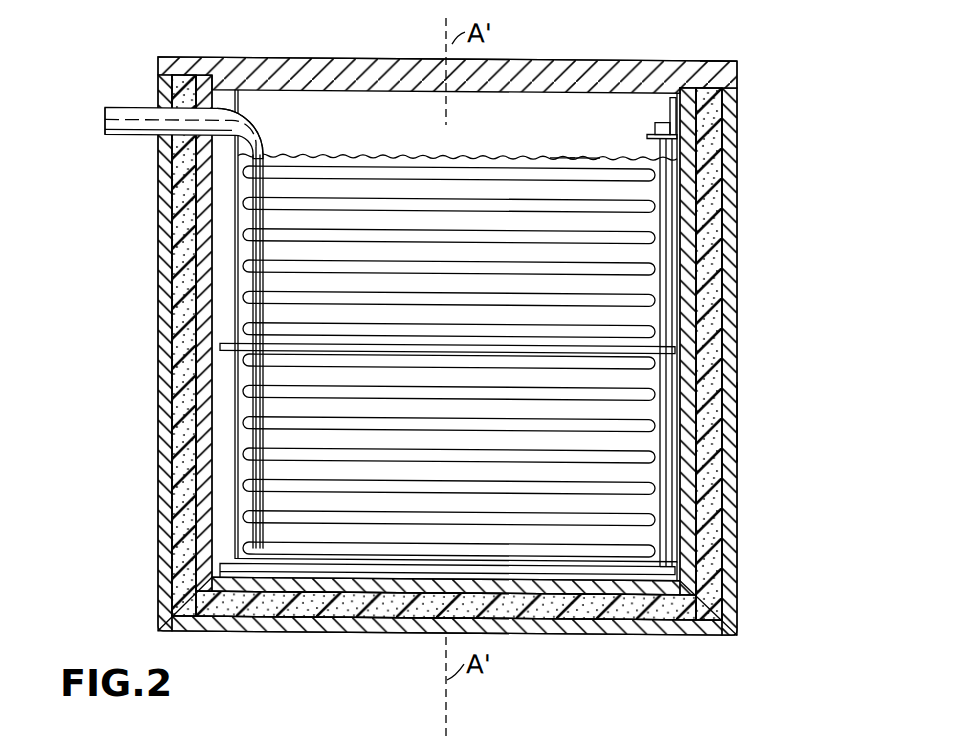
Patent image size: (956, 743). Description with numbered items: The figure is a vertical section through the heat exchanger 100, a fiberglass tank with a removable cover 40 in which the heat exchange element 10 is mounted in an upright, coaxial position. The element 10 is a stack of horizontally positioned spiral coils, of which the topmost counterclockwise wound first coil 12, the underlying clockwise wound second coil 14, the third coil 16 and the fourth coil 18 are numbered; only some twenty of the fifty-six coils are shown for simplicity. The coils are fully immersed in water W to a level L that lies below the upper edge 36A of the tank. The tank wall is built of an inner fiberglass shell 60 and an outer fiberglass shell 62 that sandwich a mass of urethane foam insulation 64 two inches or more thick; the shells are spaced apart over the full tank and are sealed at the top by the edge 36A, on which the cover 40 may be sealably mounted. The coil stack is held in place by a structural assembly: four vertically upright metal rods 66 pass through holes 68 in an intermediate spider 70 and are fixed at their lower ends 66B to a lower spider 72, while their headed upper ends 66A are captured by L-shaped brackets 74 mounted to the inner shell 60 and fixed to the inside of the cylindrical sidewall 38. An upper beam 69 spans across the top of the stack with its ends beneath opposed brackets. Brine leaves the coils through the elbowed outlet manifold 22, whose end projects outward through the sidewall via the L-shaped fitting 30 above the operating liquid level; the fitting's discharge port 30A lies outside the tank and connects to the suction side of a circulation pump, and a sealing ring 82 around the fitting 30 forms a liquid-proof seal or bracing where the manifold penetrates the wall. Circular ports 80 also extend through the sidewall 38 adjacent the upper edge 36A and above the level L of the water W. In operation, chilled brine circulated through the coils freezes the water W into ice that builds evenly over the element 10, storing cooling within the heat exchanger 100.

The heat exchange element 10 is at (268, 122).
The first spiral coil 12 is at (350, 172).
The second spiral coil 14 is at (387, 208).
The third spiral coil 16 is at (451, 238).
The fourth spiral coil 18 is at (511, 268).
The outlet manifold 22 is at (231, 256).
The L-shaped fitting 30 is at (228, 115).
The discharge port 30A is at (103, 118).
The upper edge 36A is at (714, 62).
The cylindrical sidewall 38 is at (735, 420).
The removable cover 40 is at (588, 60).
The inner fiberglass shell 60 is at (685, 195).
The outer fiberglass shell 62 is at (728, 292).
The urethane foam insulation 64 is at (703, 248).
The vertical rod 66 is at (672, 497).
The headed end 66A is at (655, 125).
The lower end 66B is at (672, 563).
The hole 68 is at (675, 348).
The upper beam 69 is at (567, 153).
The intermediate spider 70 is at (222, 347).
The lower spider 72 is at (221, 565).
The L-shaped bracket 74 is at (669, 110).
The circular port 80 is at (160, 152).
The sealing ring 82 is at (158, 105).
The heat exchanger 100 is at (742, 148).
The water W is at (301, 148).
The level L is at (583, 154).